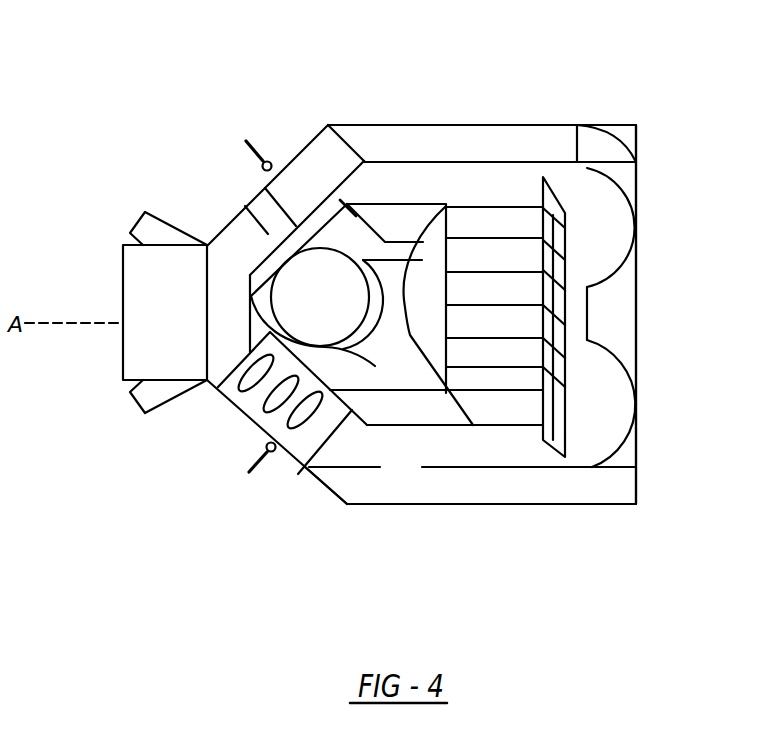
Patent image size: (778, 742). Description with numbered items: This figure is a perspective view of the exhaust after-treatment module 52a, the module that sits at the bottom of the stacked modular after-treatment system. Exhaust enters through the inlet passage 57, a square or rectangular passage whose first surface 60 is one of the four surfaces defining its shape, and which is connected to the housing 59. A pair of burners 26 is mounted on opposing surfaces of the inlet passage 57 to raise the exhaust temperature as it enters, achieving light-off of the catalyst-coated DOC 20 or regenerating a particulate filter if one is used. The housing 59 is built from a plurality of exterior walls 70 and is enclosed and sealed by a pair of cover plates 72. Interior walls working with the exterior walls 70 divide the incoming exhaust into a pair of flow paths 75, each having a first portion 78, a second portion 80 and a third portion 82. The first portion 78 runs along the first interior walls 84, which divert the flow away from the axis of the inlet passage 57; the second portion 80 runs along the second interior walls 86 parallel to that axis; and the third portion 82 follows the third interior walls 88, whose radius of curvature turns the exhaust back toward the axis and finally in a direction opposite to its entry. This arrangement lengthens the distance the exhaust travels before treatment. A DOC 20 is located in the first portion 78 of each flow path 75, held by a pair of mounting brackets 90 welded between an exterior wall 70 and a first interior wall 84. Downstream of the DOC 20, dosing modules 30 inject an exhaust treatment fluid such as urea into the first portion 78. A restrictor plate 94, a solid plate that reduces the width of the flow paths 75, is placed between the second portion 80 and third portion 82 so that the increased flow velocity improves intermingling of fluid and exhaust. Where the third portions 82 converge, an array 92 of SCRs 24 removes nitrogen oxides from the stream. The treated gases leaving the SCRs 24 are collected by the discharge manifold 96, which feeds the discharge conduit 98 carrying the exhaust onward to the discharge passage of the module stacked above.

The DOC 20 is at (268, 236).
The SCR 24 is at (509, 232).
The burner 26 is at (158, 212).
The dosing module 30 is at (270, 168).
The after-treatment module 52a is at (522, 535).
The inlet passage 57 is at (122, 310).
The housing 59 is at (595, 507).
The first surface 60 is at (165, 331).
The exterior wall 70 is at (300, 180).
The cover plate 72 is at (447, 183).
The flow path 75 is at (427, 185).
The first portion 78 is at (338, 203).
The second portion 80 is at (513, 457).
The third portion 82 is at (600, 400).
The first interior wall 84 is at (310, 228).
The second interior wall 86 is at (398, 204).
The third interior wall 88 is at (616, 181).
The mounting bracket 90 is at (268, 238).
The array 92 is at (569, 324).
The restrictor plate 94 is at (552, 208).
The discharge manifold 96 is at (425, 286).
The discharge conduit 98 is at (313, 470).